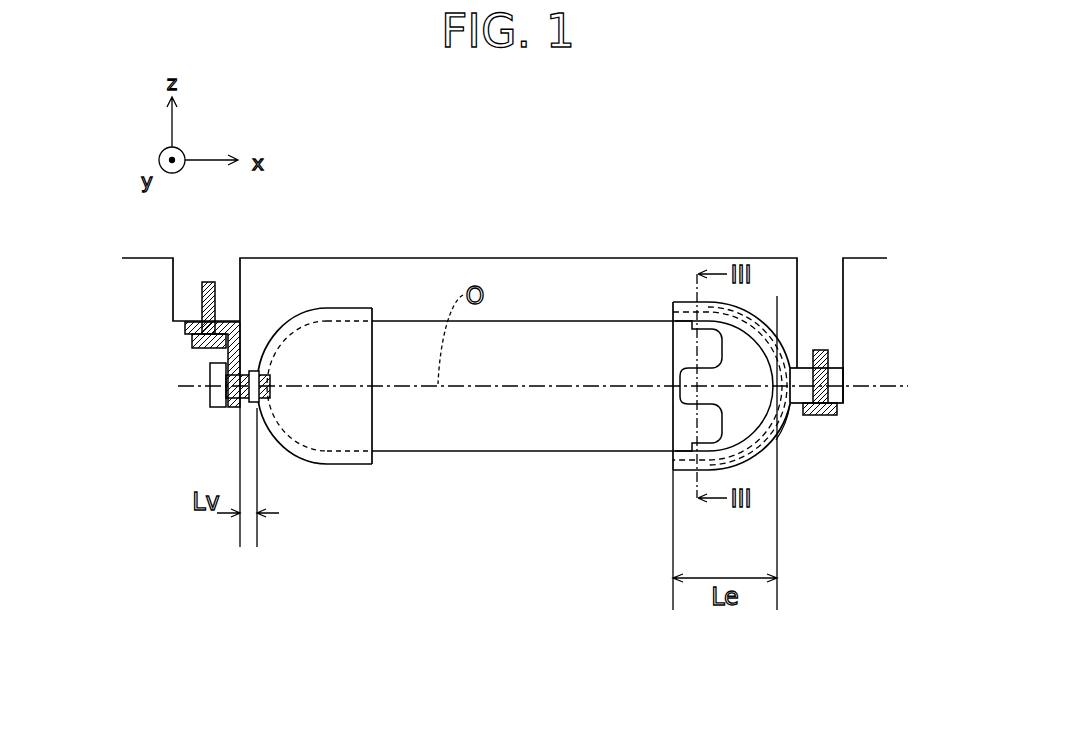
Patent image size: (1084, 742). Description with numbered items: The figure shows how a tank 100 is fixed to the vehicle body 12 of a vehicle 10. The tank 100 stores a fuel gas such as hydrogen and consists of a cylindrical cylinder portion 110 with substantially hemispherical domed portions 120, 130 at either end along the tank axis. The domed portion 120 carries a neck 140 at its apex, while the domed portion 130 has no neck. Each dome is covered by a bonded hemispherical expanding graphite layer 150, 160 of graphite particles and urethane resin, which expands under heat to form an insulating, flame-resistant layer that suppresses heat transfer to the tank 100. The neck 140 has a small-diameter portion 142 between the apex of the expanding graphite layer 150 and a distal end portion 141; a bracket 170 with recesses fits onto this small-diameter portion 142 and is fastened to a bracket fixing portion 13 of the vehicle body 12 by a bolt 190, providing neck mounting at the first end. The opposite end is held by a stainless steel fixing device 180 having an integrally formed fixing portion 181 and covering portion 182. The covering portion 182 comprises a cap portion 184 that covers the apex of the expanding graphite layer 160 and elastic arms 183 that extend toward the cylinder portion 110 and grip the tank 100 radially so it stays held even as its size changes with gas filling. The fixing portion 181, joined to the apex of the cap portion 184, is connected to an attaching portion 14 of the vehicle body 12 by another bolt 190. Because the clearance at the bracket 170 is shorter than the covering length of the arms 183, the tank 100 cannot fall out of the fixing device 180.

The vehicle 10 is at (834, 155).
The vehicle body 12 is at (503, 241).
The bracket fixing portion 13 is at (173, 311).
The attaching portion 14 is at (843, 348).
The tank 100 is at (559, 482).
The cylinder portion 110 is at (573, 320).
The domed portion 120 is at (323, 458).
The domed portion 130 is at (753, 317).
The neck 140 is at (116, 387).
The distal end portion 141 is at (207, 390).
The small-diameter portion 142 is at (247, 410).
The expanding graphite layer 150 is at (302, 318).
The expanding graphite layer 160 is at (776, 325).
The bracket 170 is at (226, 353).
The fixing device 180 is at (787, 575).
The fixing portion 181 is at (847, 393).
The covering portion 182 is at (897, 515).
The arms 183 is at (787, 418).
The cap portion 184 is at (775, 388).
The bolt 190 is at (195, 342).